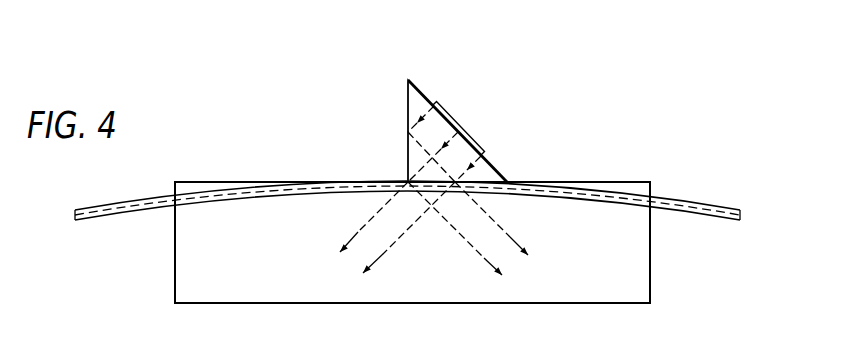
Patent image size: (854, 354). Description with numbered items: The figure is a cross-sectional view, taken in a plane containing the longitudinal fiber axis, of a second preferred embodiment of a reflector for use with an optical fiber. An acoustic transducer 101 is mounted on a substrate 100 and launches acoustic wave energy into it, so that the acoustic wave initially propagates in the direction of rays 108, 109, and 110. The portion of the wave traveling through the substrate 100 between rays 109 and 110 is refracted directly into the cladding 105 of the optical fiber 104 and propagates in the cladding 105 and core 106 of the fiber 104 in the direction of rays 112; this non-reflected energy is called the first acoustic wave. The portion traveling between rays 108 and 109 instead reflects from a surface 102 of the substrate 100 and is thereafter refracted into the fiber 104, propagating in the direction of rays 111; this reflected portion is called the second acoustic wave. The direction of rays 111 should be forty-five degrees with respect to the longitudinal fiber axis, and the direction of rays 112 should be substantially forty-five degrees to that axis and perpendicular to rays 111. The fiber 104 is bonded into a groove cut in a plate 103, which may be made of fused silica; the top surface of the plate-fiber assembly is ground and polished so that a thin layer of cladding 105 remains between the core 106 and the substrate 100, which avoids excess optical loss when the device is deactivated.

The substrate 100 is at (409, 79).
The acoustic transducer 101 is at (441, 104).
The surface of substrate 102 is at (408, 143).
The plate 103 is at (183, 275).
The optical fiber 104 is at (732, 204).
The cladding 105 is at (688, 202).
The core 106 is at (705, 214).
The ray 108 is at (421, 118).
The ray 109 is at (418, 170).
The ray 110 is at (476, 164).
The rays 111 is at (485, 258).
The rays 112 is at (384, 253).